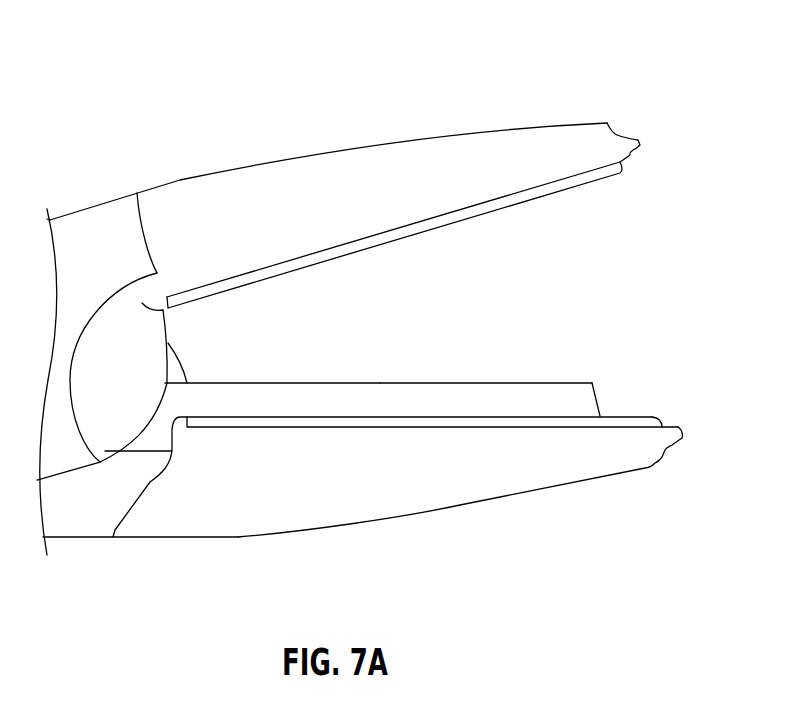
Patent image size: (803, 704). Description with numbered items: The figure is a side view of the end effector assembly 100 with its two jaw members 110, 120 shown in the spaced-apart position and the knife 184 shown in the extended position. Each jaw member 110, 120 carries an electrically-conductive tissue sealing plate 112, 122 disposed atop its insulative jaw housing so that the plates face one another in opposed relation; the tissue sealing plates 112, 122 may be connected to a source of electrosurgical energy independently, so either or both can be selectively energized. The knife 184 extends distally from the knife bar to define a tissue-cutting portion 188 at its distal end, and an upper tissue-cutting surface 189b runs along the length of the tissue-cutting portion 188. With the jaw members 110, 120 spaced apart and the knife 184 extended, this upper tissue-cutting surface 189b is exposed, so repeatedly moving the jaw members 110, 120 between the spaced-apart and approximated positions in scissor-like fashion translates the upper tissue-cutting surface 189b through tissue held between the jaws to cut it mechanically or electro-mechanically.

The end effector assembly 100 is at (608, 50).
The jaw member 110 is at (608, 125).
The tissue sealing plate 112 is at (600, 178).
The jaw member 120 is at (642, 467).
The tissue sealing plate 122 is at (647, 415).
The knife 184 is at (458, 395).
The tissue-cutting portion 188 is at (273, 395).
The upper tissue-cutting surface 189b is at (580, 373).